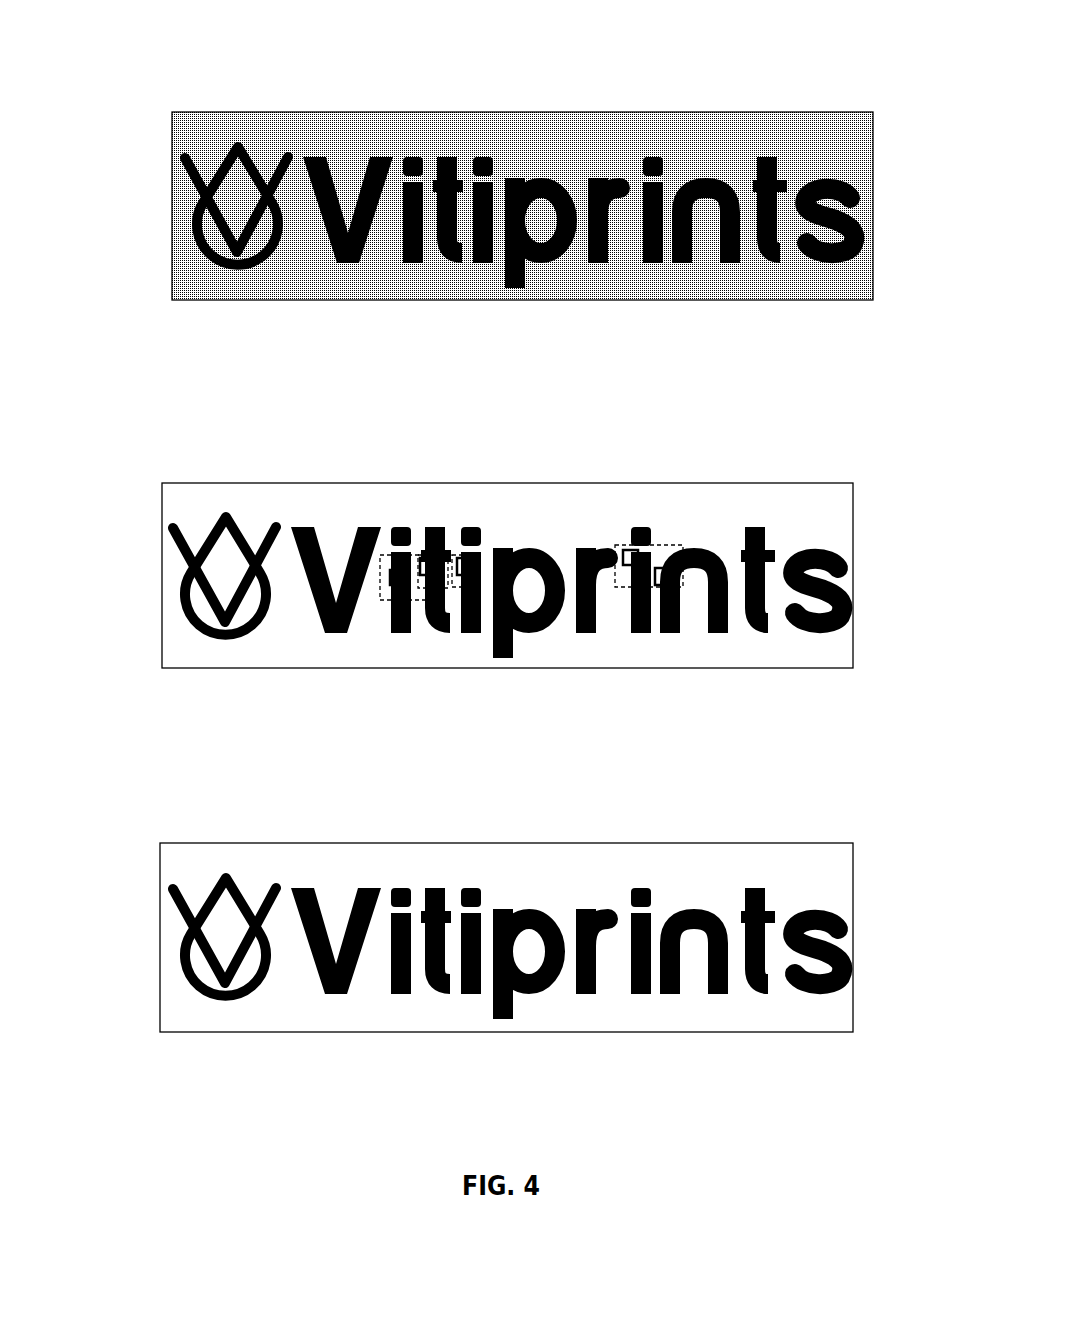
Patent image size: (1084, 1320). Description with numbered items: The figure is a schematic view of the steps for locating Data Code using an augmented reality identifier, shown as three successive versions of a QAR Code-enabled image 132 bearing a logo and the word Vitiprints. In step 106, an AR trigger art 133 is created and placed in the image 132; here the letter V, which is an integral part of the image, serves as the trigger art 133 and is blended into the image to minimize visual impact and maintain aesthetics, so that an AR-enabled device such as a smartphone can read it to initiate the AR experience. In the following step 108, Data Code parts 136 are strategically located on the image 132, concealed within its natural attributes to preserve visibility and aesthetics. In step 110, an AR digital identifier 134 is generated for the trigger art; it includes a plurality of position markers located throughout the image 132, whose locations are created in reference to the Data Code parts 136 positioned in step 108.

The step of creating and placing AR trigger art 106 is at (501, 170).
The step of locating Data Code parts 108 is at (457, 583).
The step of generating AR digital identifier 110 is at (457, 930).
The QAR Code-enabled image 132 is at (873, 138).
The AR trigger art 133 is at (223, 232).
The AR digital identifier 134 is at (362, 908).
The Data Code parts 136 is at (648, 578).